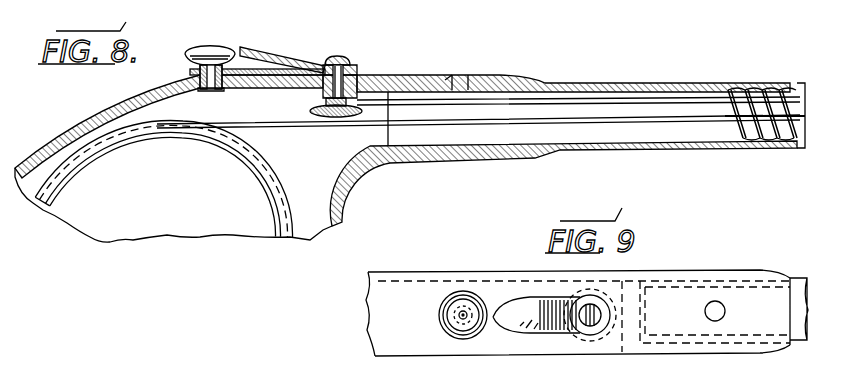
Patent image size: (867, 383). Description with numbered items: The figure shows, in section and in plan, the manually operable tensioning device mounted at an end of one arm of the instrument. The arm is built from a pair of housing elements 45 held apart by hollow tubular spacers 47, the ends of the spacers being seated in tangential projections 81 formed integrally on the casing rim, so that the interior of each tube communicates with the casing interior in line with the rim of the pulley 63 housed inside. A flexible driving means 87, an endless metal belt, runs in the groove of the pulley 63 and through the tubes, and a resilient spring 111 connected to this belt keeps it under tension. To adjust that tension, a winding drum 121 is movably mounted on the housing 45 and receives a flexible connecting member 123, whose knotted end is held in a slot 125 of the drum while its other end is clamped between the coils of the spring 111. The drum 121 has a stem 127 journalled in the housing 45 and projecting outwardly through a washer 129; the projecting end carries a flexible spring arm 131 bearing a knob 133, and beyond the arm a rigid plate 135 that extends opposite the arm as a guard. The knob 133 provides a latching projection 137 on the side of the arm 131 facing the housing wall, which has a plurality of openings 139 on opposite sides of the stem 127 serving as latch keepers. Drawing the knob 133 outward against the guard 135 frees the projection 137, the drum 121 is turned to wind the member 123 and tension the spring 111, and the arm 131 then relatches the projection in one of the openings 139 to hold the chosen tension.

In FIG. 8, the housing element 45 is at (60, 123).
In FIG. 9, the housing element 45 is at (387, 283).
In FIG. 8, the tubular spacer 47 is at (575, 85).
In FIG. 9, the tubular spacer 47 is at (790, 278).
In FIG. 8, the pulley 63 is at (260, 190).
In FIG. 8, the projection 81 is at (470, 158).
In FIG. 9, the projection 81 is at (662, 268).
In FIG. 8, the flexible driving means 87 is at (625, 118).
In FIG. 9, the flexible driving means 87 is at (687, 293).
In FIG. 8, the spring 111 is at (758, 85).
In FIG. 8, the drum 121 is at (336, 112).
In FIG. 9, the drum 121 is at (600, 340).
In FIG. 8, the flexible connecting member 123 is at (690, 100).
In FIG. 8, the slot 125 is at (320, 104).
In FIG. 8, the stem 127 is at (366, 81).
In FIG. 8, the washer 129 is at (357, 65).
In FIG. 8, the spring arm 131 is at (283, 70).
In FIG. 8, the knob 133 is at (207, 47).
In FIG. 9, the knob 133 is at (450, 297).
In FIG. 8, the plate 135 is at (263, 55).
In FIG. 9, the plate 135 is at (503, 302).
In FIG. 8, the latching projection 137 is at (212, 89).
In FIG. 8, the opening 139 is at (220, 88).
In FIG. 9, the opening 139 is at (719, 302).